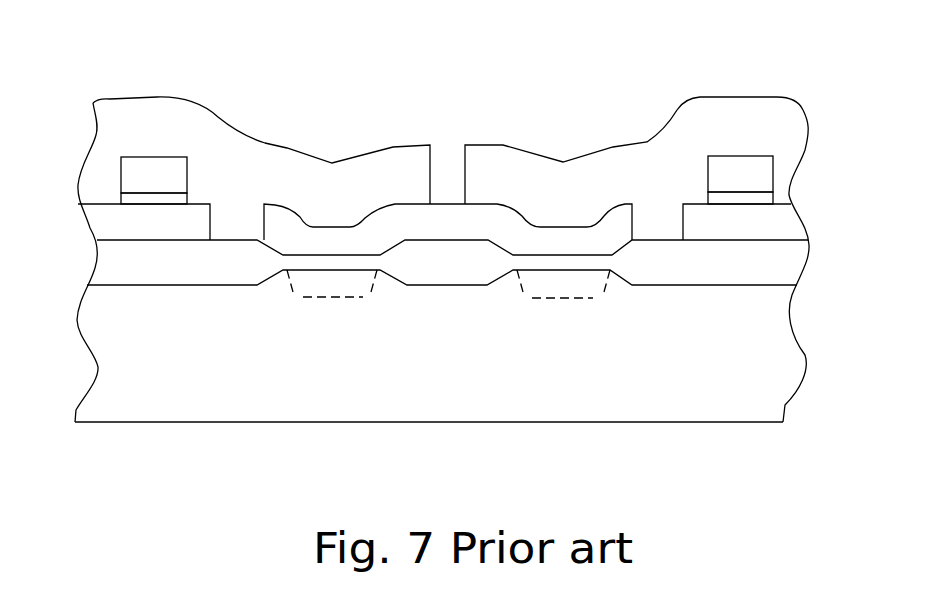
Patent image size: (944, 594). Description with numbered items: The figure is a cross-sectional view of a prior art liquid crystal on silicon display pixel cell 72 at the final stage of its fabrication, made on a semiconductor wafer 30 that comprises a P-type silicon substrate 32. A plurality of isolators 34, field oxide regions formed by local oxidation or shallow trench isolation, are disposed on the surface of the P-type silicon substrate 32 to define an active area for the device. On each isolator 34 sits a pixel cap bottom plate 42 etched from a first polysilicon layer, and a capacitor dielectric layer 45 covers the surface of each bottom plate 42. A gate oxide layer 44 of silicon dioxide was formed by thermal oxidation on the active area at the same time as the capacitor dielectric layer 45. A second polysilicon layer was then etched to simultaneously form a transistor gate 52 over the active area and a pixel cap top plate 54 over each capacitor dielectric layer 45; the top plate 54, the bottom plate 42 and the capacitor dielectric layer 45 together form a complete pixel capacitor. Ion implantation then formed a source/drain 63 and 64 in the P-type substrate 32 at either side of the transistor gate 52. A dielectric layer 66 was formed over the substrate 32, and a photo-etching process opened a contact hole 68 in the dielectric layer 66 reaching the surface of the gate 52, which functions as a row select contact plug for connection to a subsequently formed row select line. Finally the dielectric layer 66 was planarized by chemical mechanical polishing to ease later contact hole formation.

The semiconductor wafer 30 is at (833, 325).
The P-type silicon substrate 32 is at (467, 380).
The isolator 34 is at (201, 281).
The pixel cap bottom plate 42 is at (100, 222).
The gate oxide layer 44 is at (308, 263).
The capacitor dielectric layer 45 is at (137, 198).
The transistor gate 52 is at (469, 235).
The pixel cap top plate 54 is at (143, 172).
The source/drain 63 is at (333, 285).
The source/drain 64 is at (562, 283).
The dielectric layer 66 is at (266, 188).
The contact hole 68 is at (452, 136).
The liquid crystal on silicon (LCOS) display pixel cell 72 is at (318, 97).